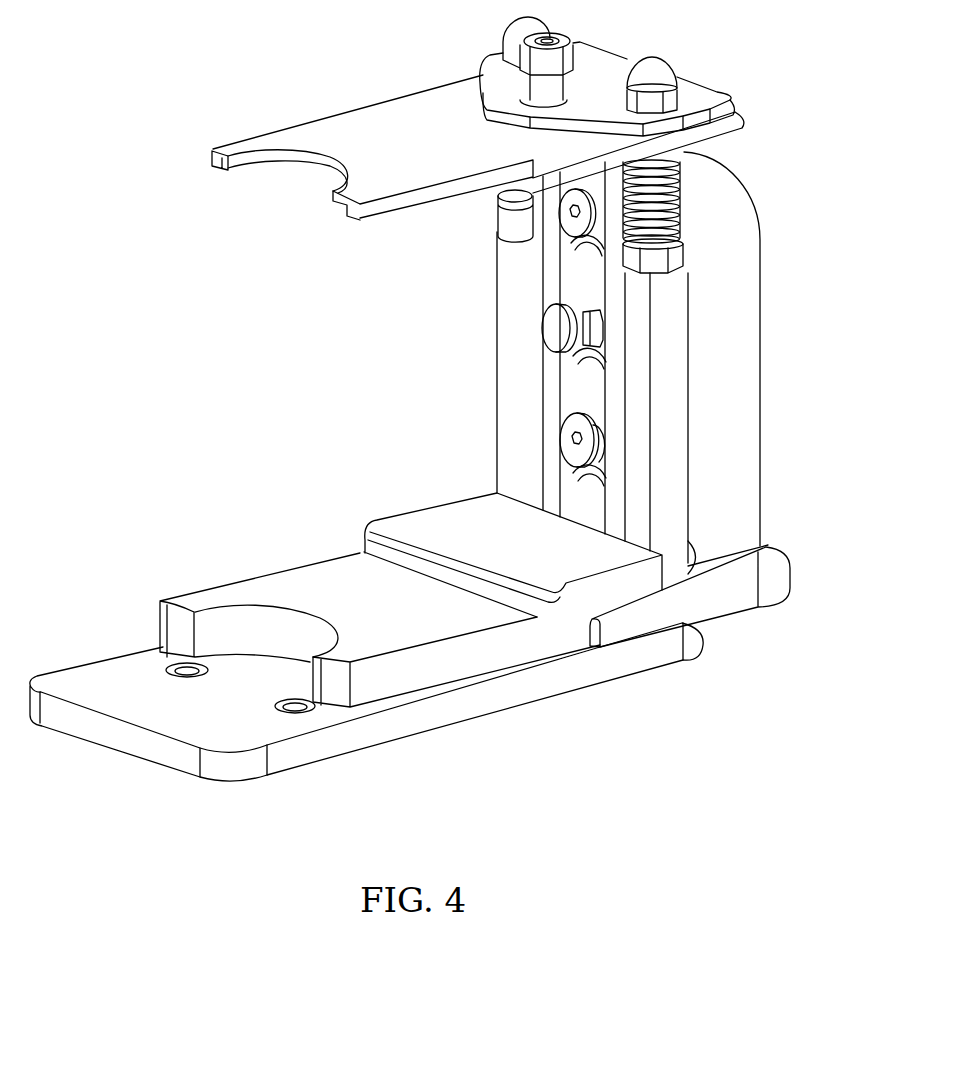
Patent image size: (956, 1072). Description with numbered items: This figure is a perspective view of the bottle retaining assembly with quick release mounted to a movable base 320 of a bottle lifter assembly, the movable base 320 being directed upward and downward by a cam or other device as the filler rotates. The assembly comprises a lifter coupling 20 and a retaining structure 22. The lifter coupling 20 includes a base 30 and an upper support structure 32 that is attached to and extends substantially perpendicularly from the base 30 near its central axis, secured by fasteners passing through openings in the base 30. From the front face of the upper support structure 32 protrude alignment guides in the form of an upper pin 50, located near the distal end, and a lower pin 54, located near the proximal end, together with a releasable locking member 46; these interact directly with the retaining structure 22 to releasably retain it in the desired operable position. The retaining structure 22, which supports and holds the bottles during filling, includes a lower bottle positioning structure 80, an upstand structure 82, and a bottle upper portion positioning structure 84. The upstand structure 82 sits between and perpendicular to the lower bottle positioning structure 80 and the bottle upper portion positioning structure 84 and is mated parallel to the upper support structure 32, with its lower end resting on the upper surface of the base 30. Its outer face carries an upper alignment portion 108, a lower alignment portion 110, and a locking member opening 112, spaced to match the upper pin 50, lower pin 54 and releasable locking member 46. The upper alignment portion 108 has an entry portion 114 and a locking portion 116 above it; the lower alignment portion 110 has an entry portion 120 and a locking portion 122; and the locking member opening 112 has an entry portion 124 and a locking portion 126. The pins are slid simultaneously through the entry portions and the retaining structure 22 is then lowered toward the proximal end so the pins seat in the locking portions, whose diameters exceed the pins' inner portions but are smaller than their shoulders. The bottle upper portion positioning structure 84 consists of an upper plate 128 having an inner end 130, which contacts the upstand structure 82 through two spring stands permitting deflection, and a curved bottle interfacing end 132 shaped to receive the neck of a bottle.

The lifter coupling 20 is at (153, 583).
The retaining structure 22 is at (690, 312).
The base 30 is at (790, 574).
The upper support structure 32 is at (763, 442).
The releasable locking member 46 is at (550, 333).
The upper pin 50 is at (684, 241).
The lower pin 54 is at (565, 448).
The lower bottle positioning structure 80 is at (432, 665).
The upstand structure 82 is at (497, 390).
The bottle upper portion positioning structure 84 is at (325, 135).
The upper alignment portion 108 is at (641, 268).
The lower alignment portion 110 is at (580, 373).
The locking member opening 112 is at (578, 497).
The entry portion 114 is at (583, 280).
The locking portion 116 is at (566, 213).
The entry portion 120 is at (601, 488).
The locking portion 122 is at (601, 448).
The entry portion 124 is at (604, 380).
The locking portion 126 is at (604, 328).
The upper plate 128 is at (433, 100).
The inner end 130 is at (616, 55).
The bottle interfacing end 132 is at (322, 170).
The movable base 320 is at (647, 675).